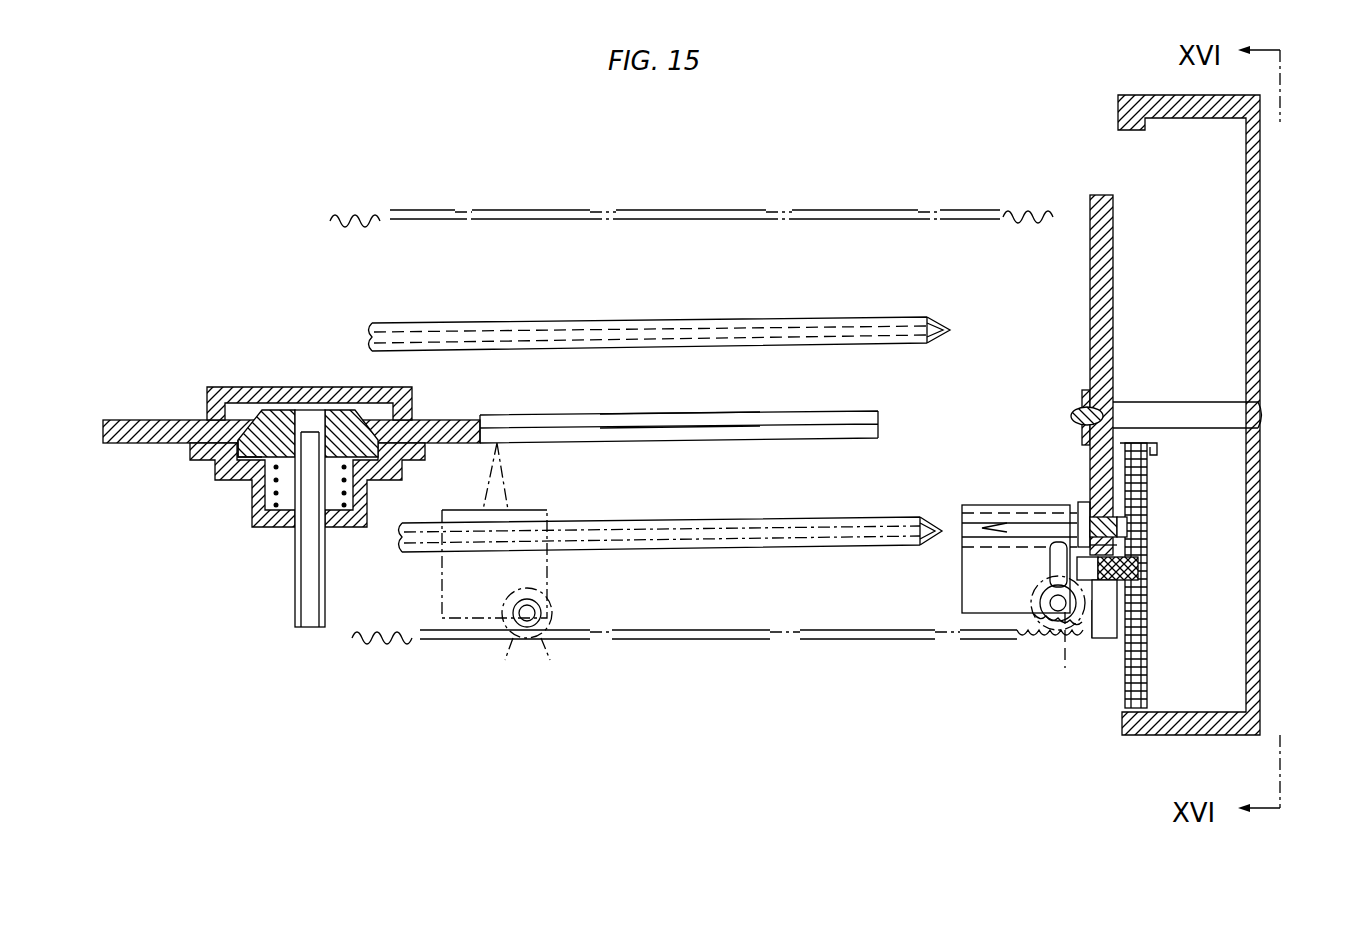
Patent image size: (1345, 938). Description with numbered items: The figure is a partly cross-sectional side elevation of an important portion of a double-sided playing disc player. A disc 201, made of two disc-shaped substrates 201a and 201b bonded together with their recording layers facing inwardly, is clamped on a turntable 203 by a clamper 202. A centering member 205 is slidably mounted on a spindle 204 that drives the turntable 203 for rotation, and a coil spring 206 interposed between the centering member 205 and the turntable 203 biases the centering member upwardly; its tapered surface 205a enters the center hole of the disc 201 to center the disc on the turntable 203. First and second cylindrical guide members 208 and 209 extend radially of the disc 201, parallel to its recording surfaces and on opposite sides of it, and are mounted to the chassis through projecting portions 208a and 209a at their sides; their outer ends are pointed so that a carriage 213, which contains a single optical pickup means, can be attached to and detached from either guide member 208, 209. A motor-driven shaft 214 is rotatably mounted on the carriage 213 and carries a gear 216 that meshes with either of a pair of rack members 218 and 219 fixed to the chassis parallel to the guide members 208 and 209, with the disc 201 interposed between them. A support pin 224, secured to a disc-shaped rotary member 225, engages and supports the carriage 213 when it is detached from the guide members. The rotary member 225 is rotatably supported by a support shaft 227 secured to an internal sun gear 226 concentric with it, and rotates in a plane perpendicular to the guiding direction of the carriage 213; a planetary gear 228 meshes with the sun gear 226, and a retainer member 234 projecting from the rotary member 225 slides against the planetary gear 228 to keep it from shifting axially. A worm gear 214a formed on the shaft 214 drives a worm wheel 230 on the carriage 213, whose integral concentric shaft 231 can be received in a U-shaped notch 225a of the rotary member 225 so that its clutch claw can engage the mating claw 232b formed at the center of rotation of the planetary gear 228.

The disc 201 is at (679, 435).
The disc-shaped substrate 201a is at (651, 437).
The disc-shaped substrate 201b is at (678, 411).
The clamper 202 is at (232, 392).
The turntable 203 is at (236, 534).
The spindle 204 is at (304, 568).
The centering member 205 is at (277, 423).
The tapered surface 205a is at (360, 388).
The coil spring 206 is at (250, 497).
The first guide member 208 is at (665, 359).
The projecting portion 208a is at (903, 330).
The second guide member 209 is at (671, 506).
The projecting portion 209a is at (881, 532).
The carriage 213 is at (455, 615).
The shaft 214 is at (798, 636).
The worm gear 214a is at (1050, 632).
The gear 216 is at (550, 632).
The rack member 218 is at (1008, 192).
The rack member 219 is at (1020, 634).
The support pin 224 is at (1082, 508).
The rotary member 225 is at (1103, 281).
The U-shaped notch 225a is at (1103, 640).
The internal sun gear 226 is at (1128, 725).
The support shaft 227 is at (1249, 411).
The planetary gear 228 is at (1138, 518).
The worm wheel 230 is at (1003, 513).
The shaft 231 is at (1105, 612).
The claw 232b is at (1140, 568).
The retainer member 234 is at (1152, 442).